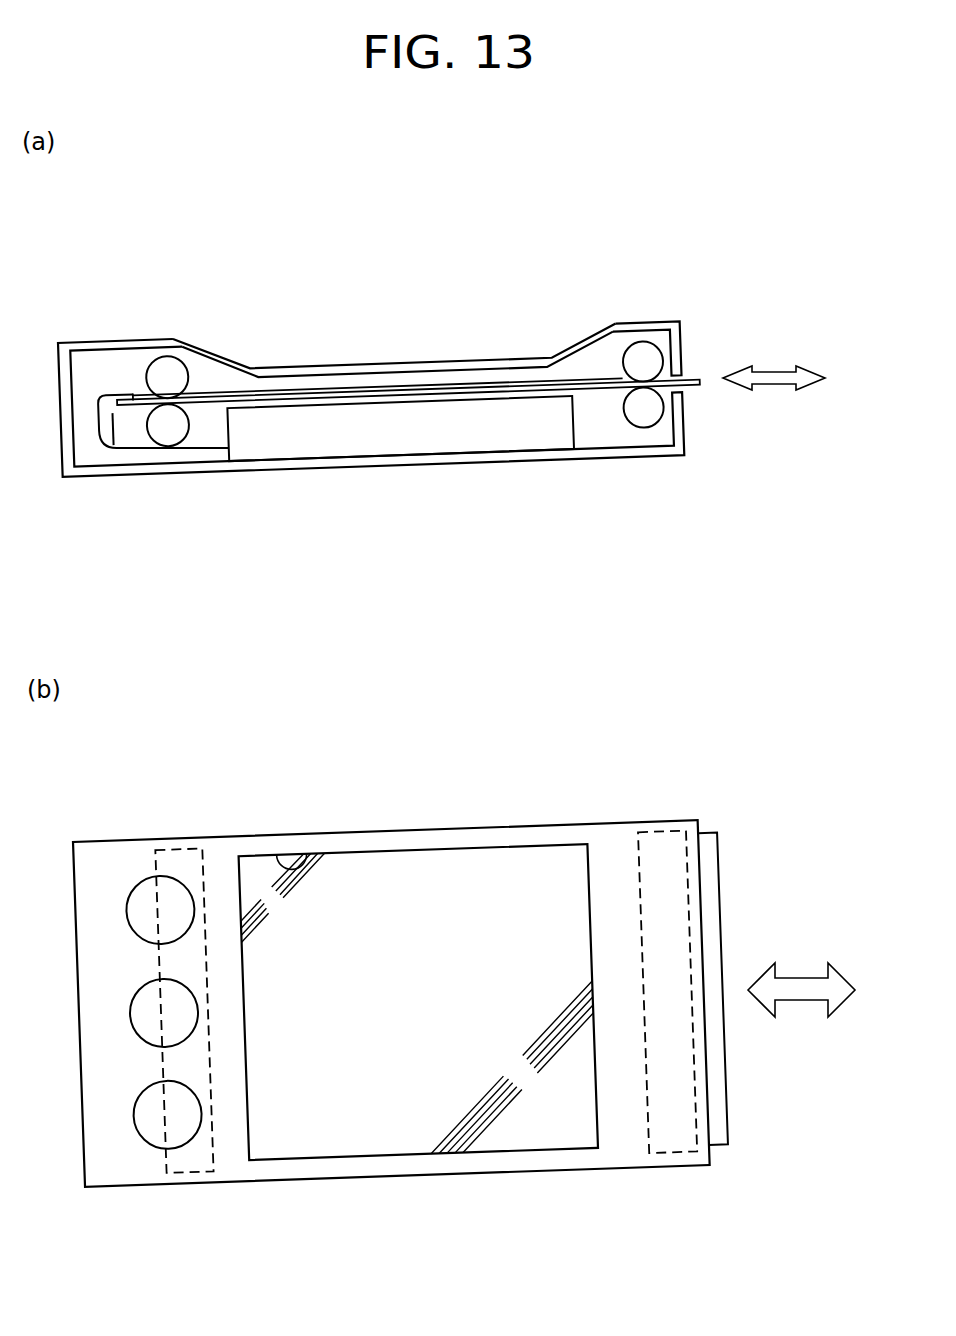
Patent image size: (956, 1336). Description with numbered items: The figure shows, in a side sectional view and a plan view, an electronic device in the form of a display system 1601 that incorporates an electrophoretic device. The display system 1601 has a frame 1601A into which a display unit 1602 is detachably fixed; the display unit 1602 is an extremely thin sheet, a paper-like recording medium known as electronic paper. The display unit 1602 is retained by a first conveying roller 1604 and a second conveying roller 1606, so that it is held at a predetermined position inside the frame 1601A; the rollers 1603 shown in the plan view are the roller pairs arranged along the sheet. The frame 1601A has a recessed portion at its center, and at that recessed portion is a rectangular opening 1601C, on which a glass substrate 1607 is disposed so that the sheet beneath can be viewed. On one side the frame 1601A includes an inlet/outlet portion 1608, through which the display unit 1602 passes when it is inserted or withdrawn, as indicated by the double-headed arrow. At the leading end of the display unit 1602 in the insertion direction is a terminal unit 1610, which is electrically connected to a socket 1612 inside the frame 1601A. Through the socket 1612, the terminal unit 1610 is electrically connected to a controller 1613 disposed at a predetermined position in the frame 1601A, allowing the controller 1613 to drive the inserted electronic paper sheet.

The display system 1601 is at (505, 297).
The frame 1601A is at (192, 352).
The opening 1601C is at (262, 366).
The display unit 1602 is at (377, 395).
The feed rollers 1603 is at (135, 880).
The first conveying roller 1604 is at (637, 338).
The second conveying roller 1606 is at (243, 360).
The glass substrate 1607 is at (483, 360).
The inlet/outlet portion 1608 is at (693, 380).
The terminal unit 1610 is at (130, 398).
The socket 1612 is at (93, 433).
The controller 1613 is at (327, 447).